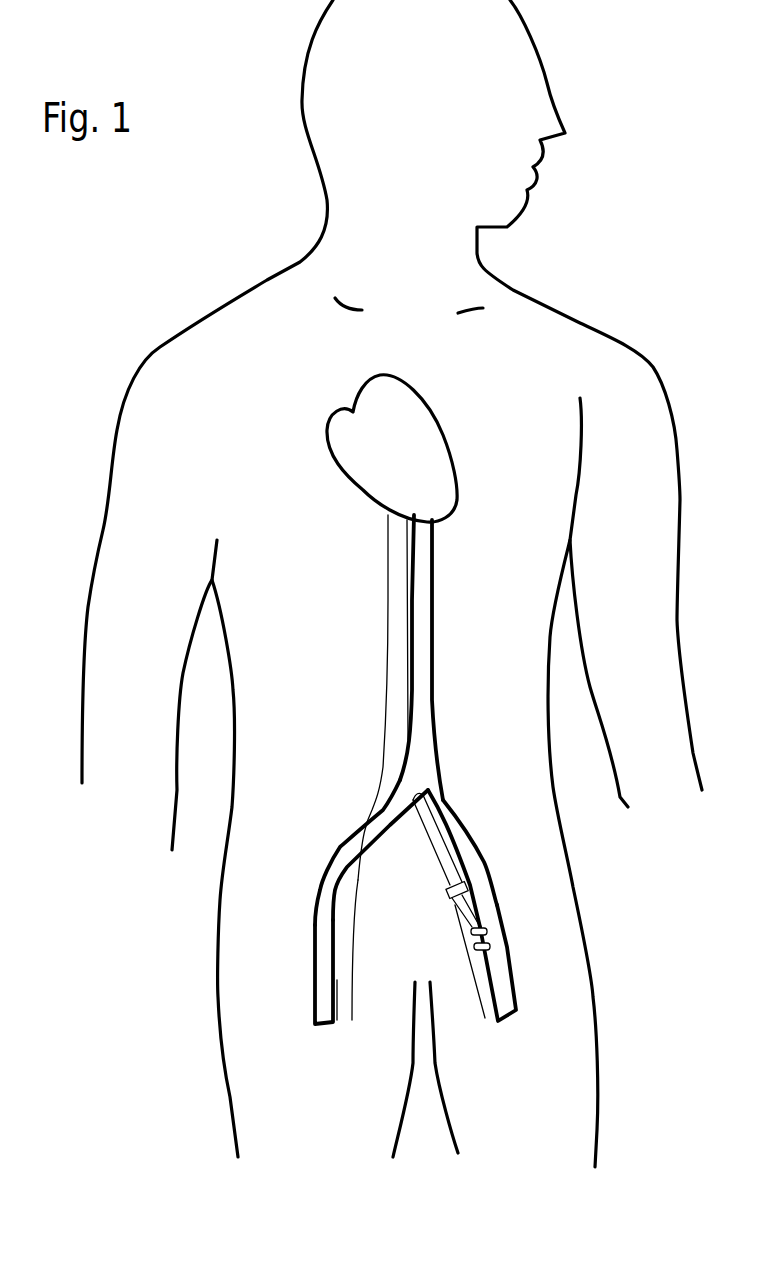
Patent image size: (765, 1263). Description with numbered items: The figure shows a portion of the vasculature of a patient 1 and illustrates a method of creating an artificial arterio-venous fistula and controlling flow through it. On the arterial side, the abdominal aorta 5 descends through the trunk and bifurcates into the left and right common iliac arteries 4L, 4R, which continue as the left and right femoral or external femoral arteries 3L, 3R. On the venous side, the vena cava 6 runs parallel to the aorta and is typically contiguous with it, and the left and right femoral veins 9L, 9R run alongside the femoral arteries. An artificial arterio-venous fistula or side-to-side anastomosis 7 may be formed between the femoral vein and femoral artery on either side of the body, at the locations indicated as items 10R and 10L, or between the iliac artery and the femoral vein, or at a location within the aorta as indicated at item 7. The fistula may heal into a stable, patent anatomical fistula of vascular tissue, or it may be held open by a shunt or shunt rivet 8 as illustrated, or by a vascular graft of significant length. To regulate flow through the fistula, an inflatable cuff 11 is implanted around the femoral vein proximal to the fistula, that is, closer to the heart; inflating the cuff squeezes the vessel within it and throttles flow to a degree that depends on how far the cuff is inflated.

The patient 1 is at (603, 305).
The right femoral artery 3R is at (313, 903).
The left femoral artery 3L is at (517, 998).
The right common iliac artery 4R is at (340, 847).
The left common iliac artery 4L is at (482, 842).
The abdominal aorta 5 is at (433, 710).
The vena cava 6 is at (382, 718).
The artificial arterio-venous fistula 7 is at (490, 945).
The shunt rivet 8 is at (488, 930).
The right femoral vein 9R is at (352, 998).
The left femoral vein 9L is at (475, 983).
The right-side fistula location 10R is at (348, 907).
The left-side fistula location 10L is at (452, 910).
The inflatable cuff 11 is at (445, 888).